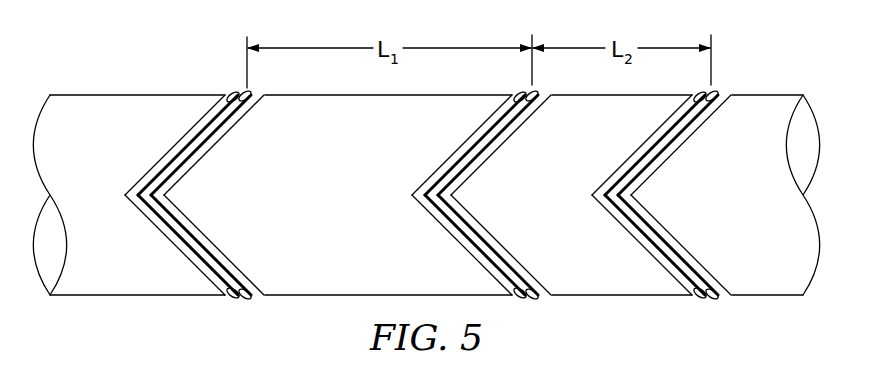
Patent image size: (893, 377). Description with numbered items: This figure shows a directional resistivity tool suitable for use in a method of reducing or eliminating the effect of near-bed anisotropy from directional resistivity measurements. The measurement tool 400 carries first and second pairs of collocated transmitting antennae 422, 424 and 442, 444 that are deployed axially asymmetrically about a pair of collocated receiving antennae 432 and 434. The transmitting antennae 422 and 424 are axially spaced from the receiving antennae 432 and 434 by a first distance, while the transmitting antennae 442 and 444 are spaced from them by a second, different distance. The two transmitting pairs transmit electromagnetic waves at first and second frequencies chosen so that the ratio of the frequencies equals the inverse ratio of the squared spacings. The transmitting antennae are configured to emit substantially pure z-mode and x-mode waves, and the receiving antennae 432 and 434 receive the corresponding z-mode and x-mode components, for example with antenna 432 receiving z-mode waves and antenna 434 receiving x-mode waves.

The measurement tool 400 is at (123, 91).
The transmitting antenna 422 is at (190, 144).
The transmitting antenna 424 is at (193, 232).
The receiving antenna 432 is at (472, 142).
The receiving antenna 434 is at (477, 228).
The transmitting antenna 442 is at (653, 142).
The transmitting antenna 444 is at (658, 228).